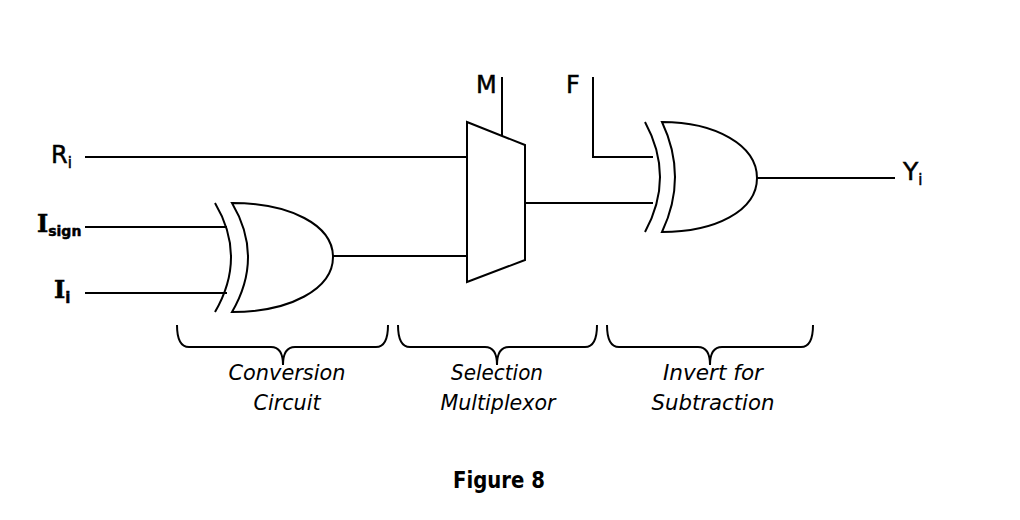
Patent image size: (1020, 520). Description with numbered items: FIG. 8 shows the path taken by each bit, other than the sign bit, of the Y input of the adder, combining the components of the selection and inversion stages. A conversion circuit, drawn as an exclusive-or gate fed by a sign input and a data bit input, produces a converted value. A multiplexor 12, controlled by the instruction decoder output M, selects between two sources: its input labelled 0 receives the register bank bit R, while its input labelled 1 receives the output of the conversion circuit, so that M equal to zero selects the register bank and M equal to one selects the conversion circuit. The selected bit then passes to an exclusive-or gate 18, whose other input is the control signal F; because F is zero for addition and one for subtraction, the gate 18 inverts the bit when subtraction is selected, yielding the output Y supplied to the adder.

The multiplexor 12 is at (497, 278).
The exclusive-or gate 18 is at (745, 215).
The multiplexor input 0 (R_i) 0 is at (291, 154).
The multiplexor input 1 (conversion circuit output) 1 is at (415, 257).